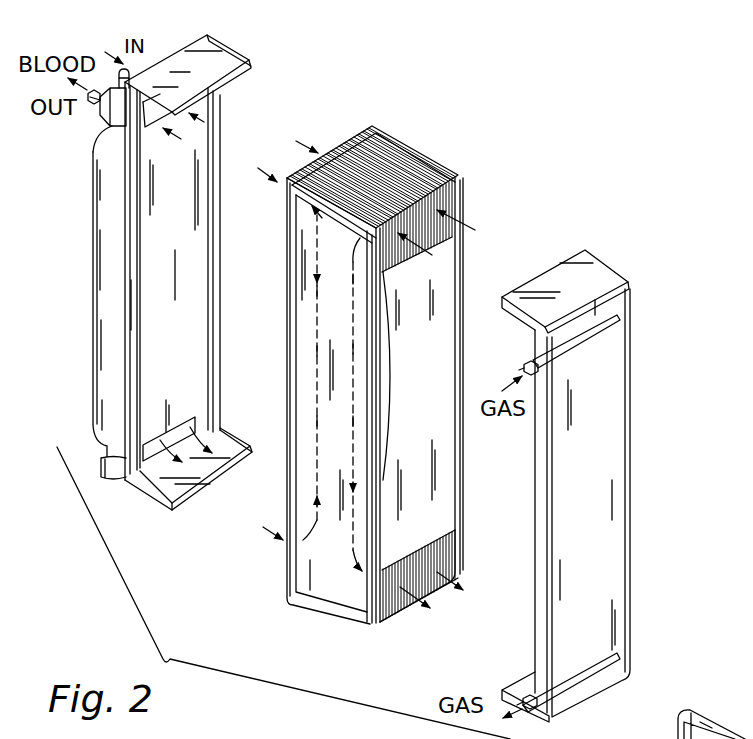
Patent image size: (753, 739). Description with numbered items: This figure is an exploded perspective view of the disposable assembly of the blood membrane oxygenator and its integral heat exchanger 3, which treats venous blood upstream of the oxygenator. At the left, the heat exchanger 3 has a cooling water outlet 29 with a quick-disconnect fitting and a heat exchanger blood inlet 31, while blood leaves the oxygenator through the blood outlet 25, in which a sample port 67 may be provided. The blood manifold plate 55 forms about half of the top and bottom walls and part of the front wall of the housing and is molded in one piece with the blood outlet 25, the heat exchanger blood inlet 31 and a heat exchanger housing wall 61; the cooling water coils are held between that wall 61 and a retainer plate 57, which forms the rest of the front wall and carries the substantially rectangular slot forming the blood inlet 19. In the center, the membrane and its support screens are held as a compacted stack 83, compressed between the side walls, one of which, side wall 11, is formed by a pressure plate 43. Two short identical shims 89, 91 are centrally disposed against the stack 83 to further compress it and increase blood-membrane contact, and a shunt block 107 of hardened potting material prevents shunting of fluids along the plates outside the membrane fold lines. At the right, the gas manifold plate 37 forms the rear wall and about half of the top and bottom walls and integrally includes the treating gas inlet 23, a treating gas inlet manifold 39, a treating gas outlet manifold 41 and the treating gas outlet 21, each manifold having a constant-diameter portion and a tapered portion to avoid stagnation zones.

The integral heat exchanger 3 is at (90, 347).
The side wall 11 is at (325, 572).
The blood inlet 19 is at (200, 428).
The treating gas outlet 21 is at (548, 711).
The treating gas inlet 23 is at (532, 362).
The blood outlet 25 is at (100, 113).
The cooling water outlet 29 is at (118, 471).
The heat exchanger blood inlet 31 is at (138, 68).
The gas manifold plate 37 is at (610, 464).
The treating gas inlet manifold 39 is at (569, 338).
The treating gas outlet manifold 41 is at (568, 678).
The pressure plate 43 is at (310, 472).
The blood manifold plate 55 is at (248, 50).
The retainer plate 57 is at (182, 260).
The heat exchanger housing wall 61 is at (110, 268).
The sample port 67 is at (133, 73).
The compacted stack 83 is at (407, 172).
The shim 89 is at (388, 412).
The shim 91 is at (453, 398).
The shunt block 107 is at (432, 494).